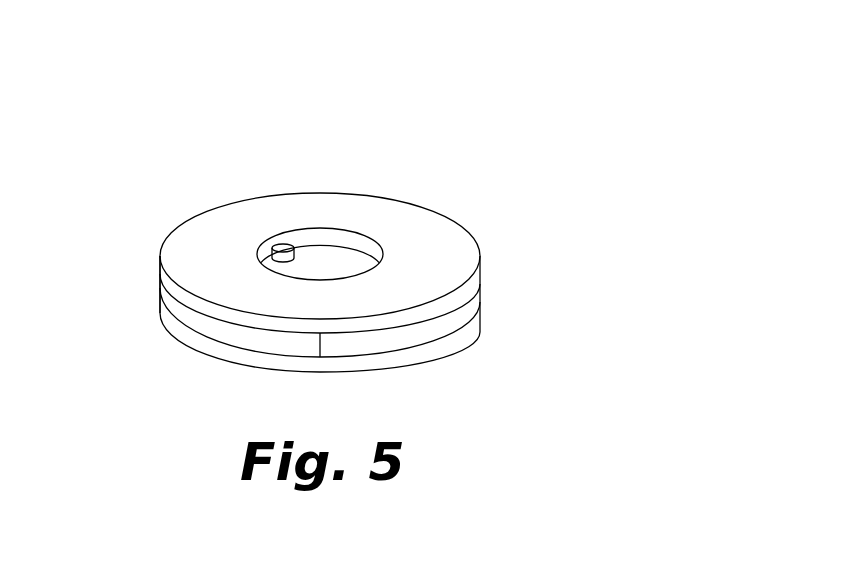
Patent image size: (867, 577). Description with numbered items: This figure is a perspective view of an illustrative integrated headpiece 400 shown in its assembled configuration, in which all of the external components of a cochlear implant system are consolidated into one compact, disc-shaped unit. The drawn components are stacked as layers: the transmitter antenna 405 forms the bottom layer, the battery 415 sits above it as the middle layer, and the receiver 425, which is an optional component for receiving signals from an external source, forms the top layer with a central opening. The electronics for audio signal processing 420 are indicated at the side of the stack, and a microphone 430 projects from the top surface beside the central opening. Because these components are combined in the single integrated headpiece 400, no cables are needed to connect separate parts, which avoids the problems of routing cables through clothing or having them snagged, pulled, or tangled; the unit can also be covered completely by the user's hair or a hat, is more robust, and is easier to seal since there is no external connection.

The integrated headpiece 400 is at (580, 35).
The transmitter antenna 405 is at (462, 335).
The battery 415 is at (468, 305).
The electronics for audio signal processing 420 is at (173, 307).
The receiver 425 is at (448, 240).
The microphone 430 is at (277, 241).